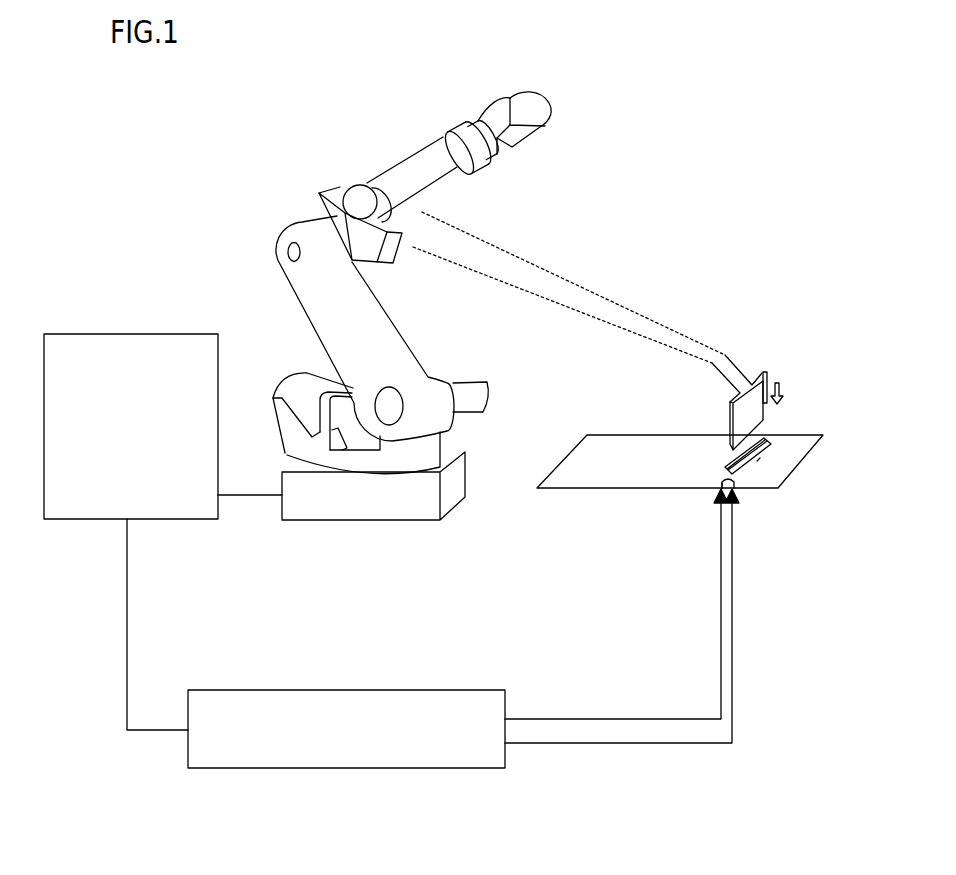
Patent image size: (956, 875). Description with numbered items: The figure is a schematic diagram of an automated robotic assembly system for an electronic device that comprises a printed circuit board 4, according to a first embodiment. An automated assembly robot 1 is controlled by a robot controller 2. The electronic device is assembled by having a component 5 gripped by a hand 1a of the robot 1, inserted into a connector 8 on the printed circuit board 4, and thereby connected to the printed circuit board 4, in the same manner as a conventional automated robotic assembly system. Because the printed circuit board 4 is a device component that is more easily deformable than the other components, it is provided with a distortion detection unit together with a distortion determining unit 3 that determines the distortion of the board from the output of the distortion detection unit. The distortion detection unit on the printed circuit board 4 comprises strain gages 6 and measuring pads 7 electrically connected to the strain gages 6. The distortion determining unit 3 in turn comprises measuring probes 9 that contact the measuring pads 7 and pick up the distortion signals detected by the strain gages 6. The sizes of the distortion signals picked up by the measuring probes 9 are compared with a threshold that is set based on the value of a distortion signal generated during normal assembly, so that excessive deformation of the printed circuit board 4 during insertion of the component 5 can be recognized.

The automated assembly robot 1 is at (389, 166).
The hand 1a is at (763, 372).
The robot controller 2 is at (88, 334).
The distortion determining unit 3 is at (312, 690).
The printed circuit board 4 is at (685, 435).
The component 5 is at (763, 420).
The strain gages 6 is at (732, 482).
The measuring pads 7 is at (723, 487).
The connector 8 is at (757, 461).
The measuring probes 9 is at (735, 505).